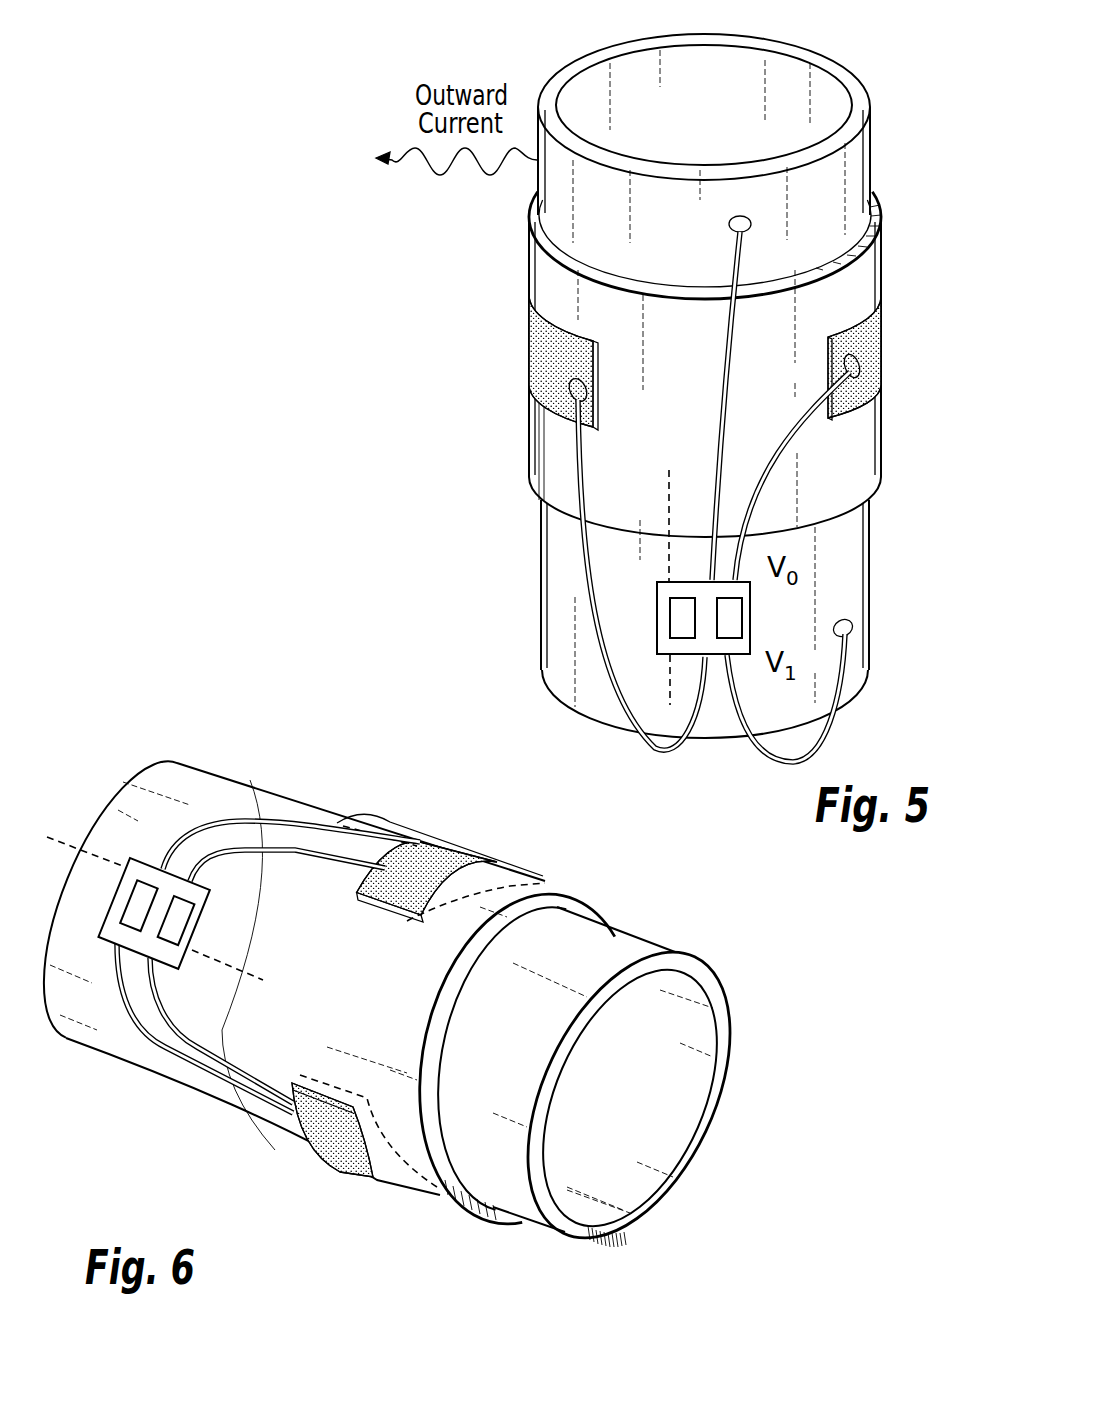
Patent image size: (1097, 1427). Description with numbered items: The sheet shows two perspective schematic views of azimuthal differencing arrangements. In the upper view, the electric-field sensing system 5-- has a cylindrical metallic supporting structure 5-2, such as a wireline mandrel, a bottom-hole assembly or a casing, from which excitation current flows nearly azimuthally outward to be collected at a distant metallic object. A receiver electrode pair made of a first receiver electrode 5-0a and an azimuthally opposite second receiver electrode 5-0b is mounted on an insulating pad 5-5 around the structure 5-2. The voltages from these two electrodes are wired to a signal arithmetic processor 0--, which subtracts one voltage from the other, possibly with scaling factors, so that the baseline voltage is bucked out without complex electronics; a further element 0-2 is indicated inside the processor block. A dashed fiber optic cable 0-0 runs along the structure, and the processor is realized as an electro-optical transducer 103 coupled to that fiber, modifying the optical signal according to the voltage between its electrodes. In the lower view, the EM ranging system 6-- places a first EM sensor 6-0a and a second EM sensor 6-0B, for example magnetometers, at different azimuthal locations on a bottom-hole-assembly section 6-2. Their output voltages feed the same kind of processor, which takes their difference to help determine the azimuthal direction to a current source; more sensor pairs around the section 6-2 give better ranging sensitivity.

In FIG. 5, the electric-field sensing system 5-- is at (905, 126).
In FIG. 5, the cylindrical metallic supporting structure 5-2 is at (862, 186).
In FIG. 5, the insulating pad 5-5 is at (866, 278).
In FIG. 5, the first receiver electrode 5-0a is at (527, 350).
In FIG. 5, the second receiver electrode 5-0b is at (882, 340).
In FIG. 5, the fiber optic cable 0-0 is at (668, 478).
In FIG. 6, the fiber optic cable 0-0 is at (245, 968).
In FIG. 5, the signal arithmetic processor 0-- is at (658, 584).
In FIG. 6, the signal arithmetic processor 0-- is at (205, 916).
In FIG. 5, the sensor element 0 0-2 is at (668, 620).
In FIG. 6, the EM ranging system 6-- is at (300, 724).
In FIG. 6, the bottom-hole-assembly section 6-2 is at (505, 1200).
In FIG. 6, the first EM sensor 6-0a is at (470, 855).
In FIG. 6, the second EM sensor 6-0B is at (340, 1172).
In FIG. 6, the electro-optical transducer 103 is at (127, 907).